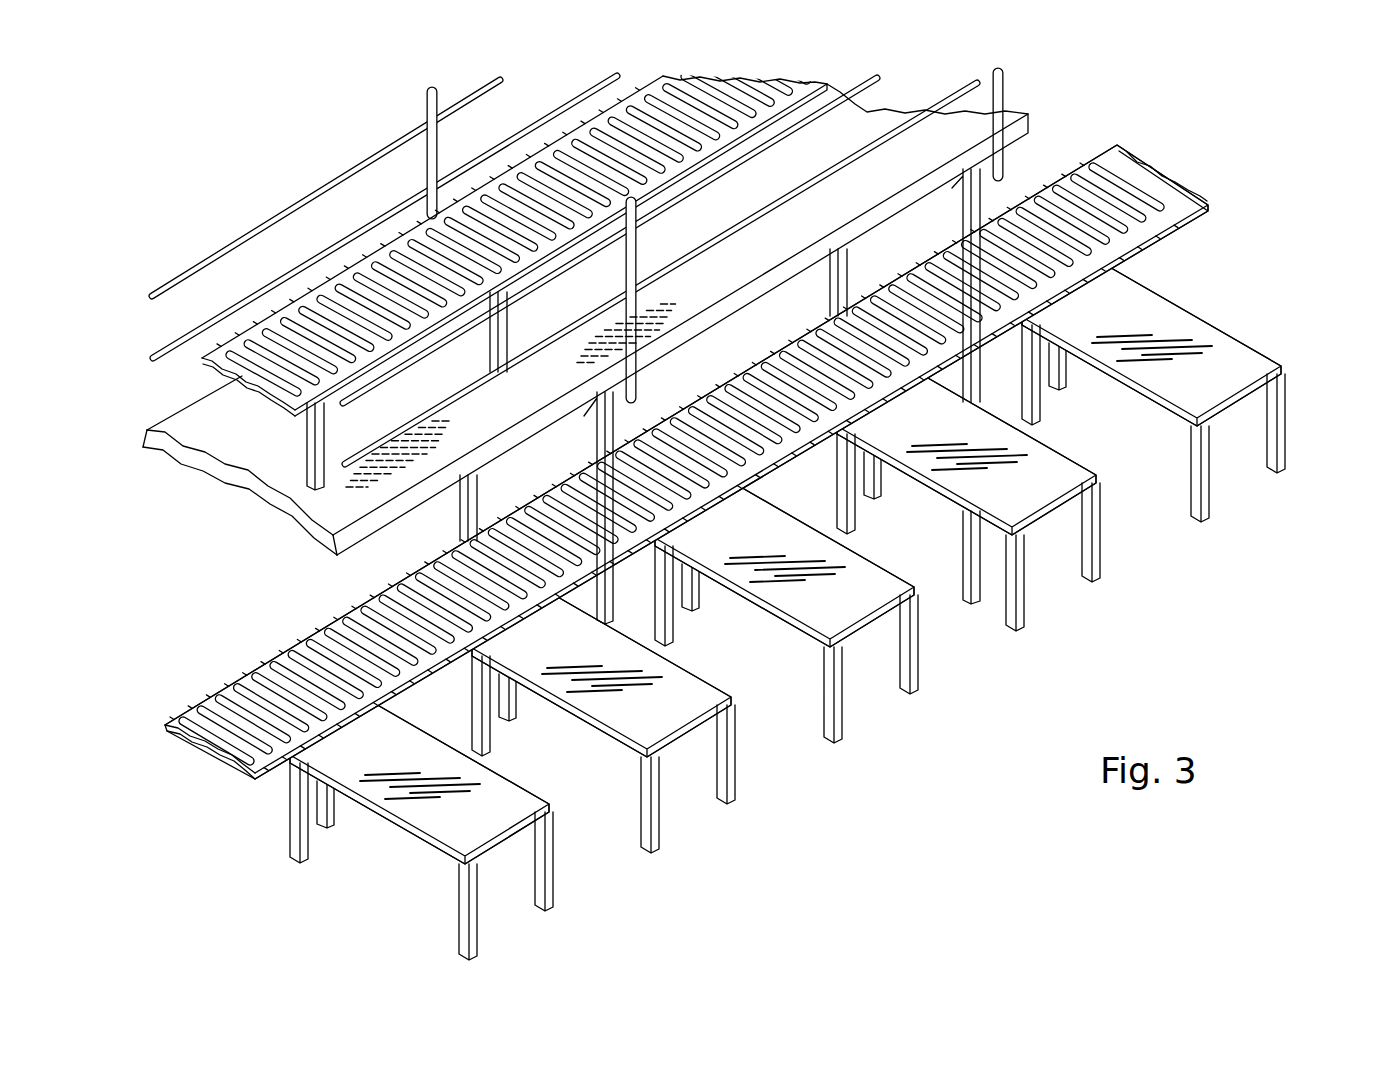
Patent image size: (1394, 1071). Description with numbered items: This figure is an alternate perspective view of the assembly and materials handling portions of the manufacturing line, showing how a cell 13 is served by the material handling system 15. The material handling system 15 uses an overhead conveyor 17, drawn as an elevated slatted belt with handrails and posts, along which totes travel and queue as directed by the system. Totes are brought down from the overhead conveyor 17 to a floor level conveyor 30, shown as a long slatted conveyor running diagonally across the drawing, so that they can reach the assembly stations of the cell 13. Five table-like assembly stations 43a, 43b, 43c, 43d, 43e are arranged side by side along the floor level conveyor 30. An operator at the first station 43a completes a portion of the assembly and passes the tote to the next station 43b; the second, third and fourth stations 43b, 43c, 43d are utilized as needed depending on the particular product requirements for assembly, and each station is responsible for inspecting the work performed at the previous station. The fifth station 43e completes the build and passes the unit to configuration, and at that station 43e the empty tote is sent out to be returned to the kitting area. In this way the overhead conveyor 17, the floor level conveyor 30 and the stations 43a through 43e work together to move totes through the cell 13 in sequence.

The cell 13 is at (747, 536).
The material handling system 15 is at (170, 385).
The overhead conveyor 17 is at (257, 388).
The floor level conveyor 30 is at (213, 718).
The first assembly station 43a is at (501, 805).
The second assembly station 43b is at (687, 716).
The third assembly station 43c is at (863, 580).
The fourth assembly station 43d is at (1045, 477).
The fifth assembly station 43e is at (1245, 372).